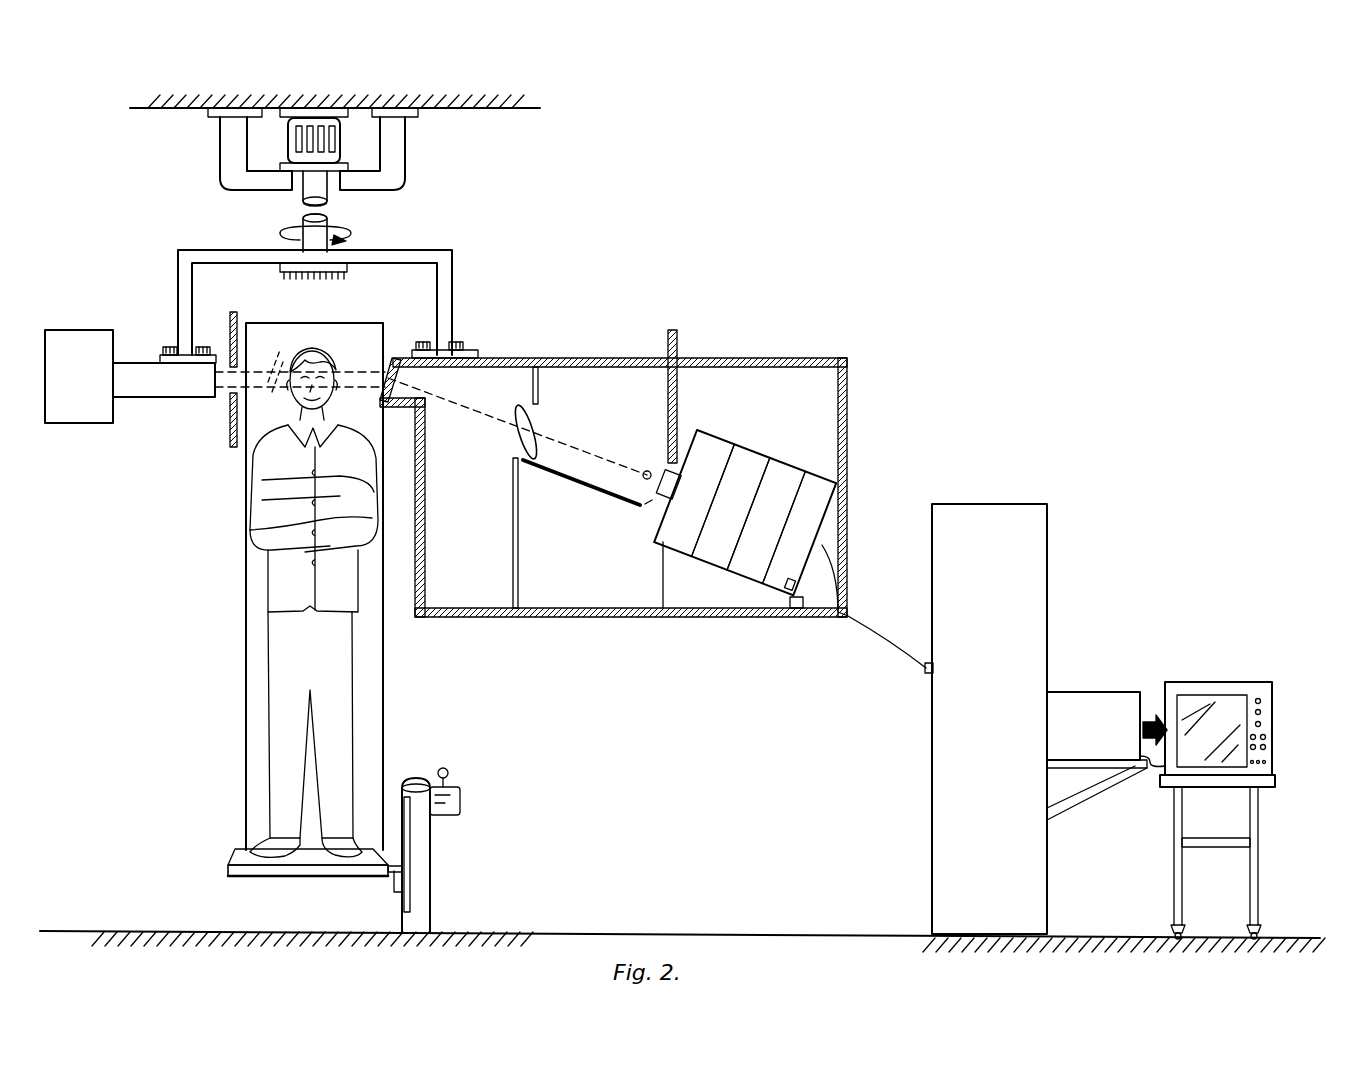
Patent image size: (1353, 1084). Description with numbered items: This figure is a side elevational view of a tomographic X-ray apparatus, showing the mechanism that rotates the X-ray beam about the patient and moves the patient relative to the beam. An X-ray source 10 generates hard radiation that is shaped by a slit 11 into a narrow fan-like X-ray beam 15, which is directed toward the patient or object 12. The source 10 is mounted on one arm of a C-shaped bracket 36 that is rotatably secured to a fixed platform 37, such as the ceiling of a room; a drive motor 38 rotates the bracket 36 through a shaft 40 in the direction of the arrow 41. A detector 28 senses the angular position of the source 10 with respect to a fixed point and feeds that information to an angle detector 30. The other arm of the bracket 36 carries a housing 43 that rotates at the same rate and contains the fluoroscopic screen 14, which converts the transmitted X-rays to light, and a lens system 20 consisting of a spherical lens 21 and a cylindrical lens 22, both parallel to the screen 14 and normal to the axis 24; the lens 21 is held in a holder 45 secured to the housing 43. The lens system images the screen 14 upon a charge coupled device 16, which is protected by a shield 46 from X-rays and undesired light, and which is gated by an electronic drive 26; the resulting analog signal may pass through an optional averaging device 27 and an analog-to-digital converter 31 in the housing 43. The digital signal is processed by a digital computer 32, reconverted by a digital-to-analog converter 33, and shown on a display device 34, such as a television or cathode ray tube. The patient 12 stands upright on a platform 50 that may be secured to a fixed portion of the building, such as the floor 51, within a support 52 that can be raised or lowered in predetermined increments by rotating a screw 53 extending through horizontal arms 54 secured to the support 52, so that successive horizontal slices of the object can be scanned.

The X-ray source 10 is at (70, 330).
The slit 11 is at (236, 312).
The patient or object 12 is at (268, 581).
The fluoroscopic screen 14 is at (398, 362).
The X-ray beam 15 is at (300, 360).
The charge coupled device 16 is at (712, 430).
The lens system 20 is at (577, 479).
The spherical lens 21 is at (582, 409).
The cylindrical lens 22 is at (652, 470).
The axis 24 is at (611, 447).
The electronic drive 26 is at (758, 419).
The averaging device 27 is at (792, 433).
The detector 28 is at (348, 268).
The angle detector 30 is at (807, 471).
The analog-to-digital converter 31 is at (793, 599).
The digital computer 32 is at (998, 504).
The digital-to-analog converter 33 is at (1115, 692).
The display device 34 is at (1225, 682).
The C-shaped bracket 36 is at (452, 293).
The fixed platform 37 is at (458, 110).
The drive motor 38 is at (341, 138).
The shaft 40 is at (303, 198).
The arrow 41 is at (331, 234).
The housing 43 is at (628, 620).
The holder 45 is at (518, 556).
The shield 46 is at (677, 336).
The platform 50 is at (228, 871).
The floor 51 is at (617, 929).
The support 52 is at (383, 681).
The screw 53 is at (433, 861).
The horizontal arms 54 is at (394, 891).